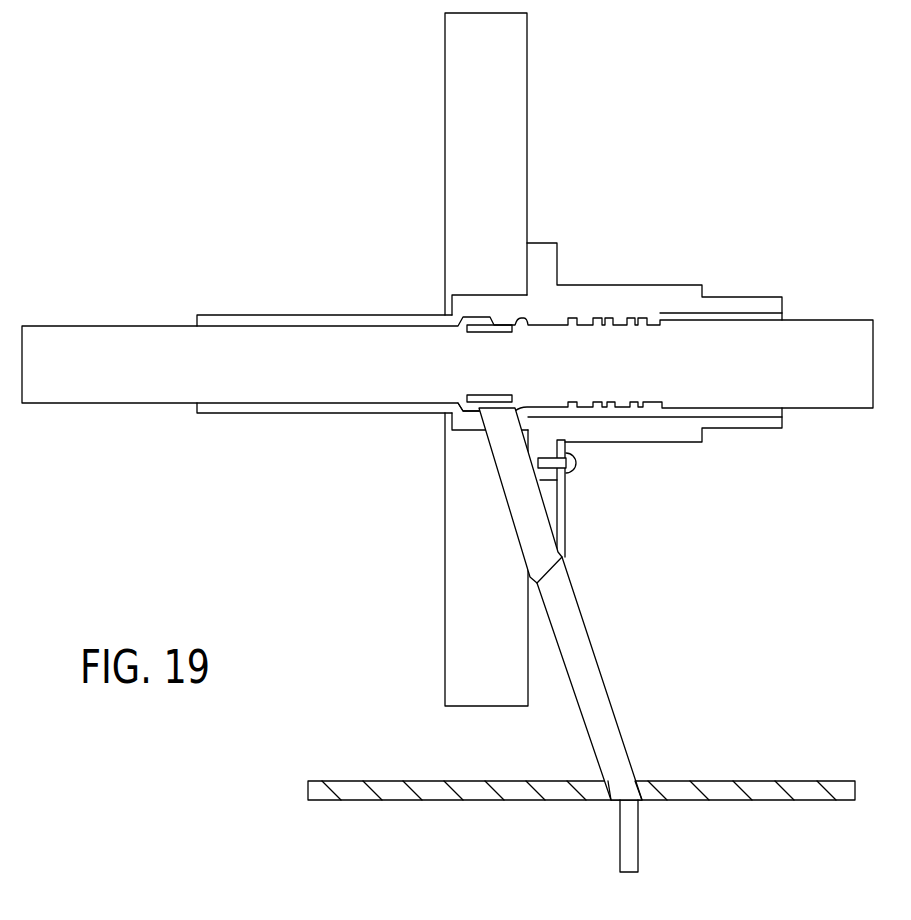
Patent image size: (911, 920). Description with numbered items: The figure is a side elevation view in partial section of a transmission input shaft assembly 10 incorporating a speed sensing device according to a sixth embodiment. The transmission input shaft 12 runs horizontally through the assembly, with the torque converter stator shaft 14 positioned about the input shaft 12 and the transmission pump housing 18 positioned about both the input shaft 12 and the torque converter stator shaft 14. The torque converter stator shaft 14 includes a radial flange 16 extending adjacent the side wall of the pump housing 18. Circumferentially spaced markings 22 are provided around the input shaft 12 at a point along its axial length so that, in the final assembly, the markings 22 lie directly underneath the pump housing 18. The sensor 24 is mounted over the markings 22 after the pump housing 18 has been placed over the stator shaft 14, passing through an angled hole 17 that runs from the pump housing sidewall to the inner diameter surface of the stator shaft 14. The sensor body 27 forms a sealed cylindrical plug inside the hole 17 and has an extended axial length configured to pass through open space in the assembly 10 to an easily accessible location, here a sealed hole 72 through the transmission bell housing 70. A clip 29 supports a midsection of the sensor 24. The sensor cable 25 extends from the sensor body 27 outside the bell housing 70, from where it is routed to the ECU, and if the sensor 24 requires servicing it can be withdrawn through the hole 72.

The transmission input shaft assembly 10 is at (713, 127).
The input shaft 12 is at (131, 403).
The torque converter stator shaft 14 is at (390, 414).
The radial flange 16 is at (558, 265).
The angled hole 17 is at (482, 420).
The transmission pump housing 18 is at (528, 72).
The circumferentially spaced markings 22 is at (492, 322).
The sensor 24 is at (512, 508).
The sensor cable 25 is at (640, 837).
The sensor body 27 is at (533, 508).
The clip 29 is at (562, 543).
The transmission bell housing 70 is at (757, 792).
The sealed hole 72 is at (638, 780).